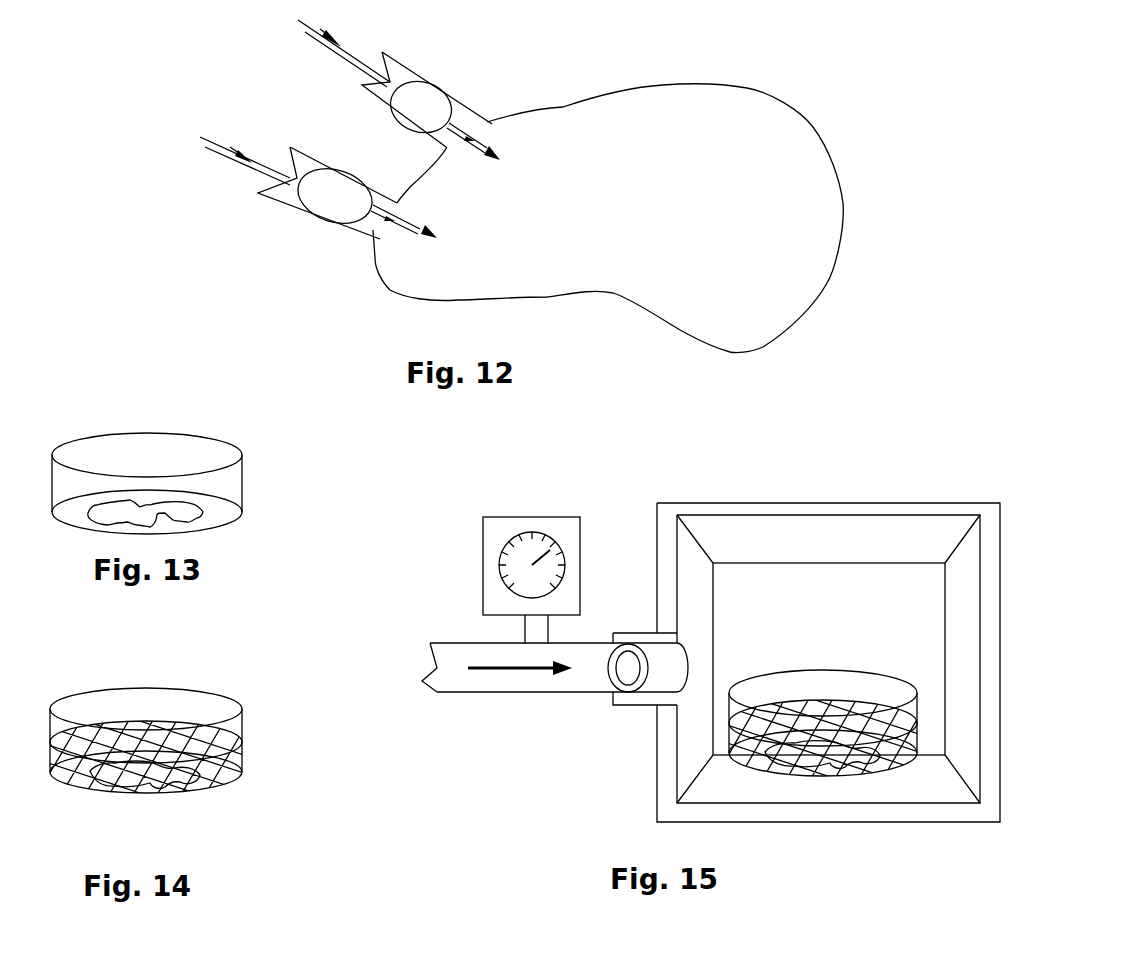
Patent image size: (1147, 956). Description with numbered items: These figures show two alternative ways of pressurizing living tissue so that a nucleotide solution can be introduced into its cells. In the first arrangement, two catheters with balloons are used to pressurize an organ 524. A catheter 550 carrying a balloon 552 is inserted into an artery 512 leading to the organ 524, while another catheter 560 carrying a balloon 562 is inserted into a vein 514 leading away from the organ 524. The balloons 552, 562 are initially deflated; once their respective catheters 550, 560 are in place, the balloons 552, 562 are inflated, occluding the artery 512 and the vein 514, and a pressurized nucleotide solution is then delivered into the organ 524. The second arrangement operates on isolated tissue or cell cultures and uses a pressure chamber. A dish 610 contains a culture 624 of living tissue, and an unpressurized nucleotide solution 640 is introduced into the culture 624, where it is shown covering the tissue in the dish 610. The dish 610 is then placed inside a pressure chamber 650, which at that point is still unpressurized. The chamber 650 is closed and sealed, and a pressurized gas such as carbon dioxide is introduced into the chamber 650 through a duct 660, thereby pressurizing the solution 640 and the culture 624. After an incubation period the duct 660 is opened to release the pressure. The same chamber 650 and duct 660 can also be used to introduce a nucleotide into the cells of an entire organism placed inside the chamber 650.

In FIG. 12, the artery 512 is at (468, 117).
In FIG. 12, the vein 514 is at (373, 230).
In FIG. 12, the organ 524 is at (568, 107).
In FIG. 12, the catheter 550 is at (352, 67).
In FIG. 12, the balloon 552 is at (420, 93).
In FIG. 12, the catheter 560 is at (258, 167).
In FIG. 12, the balloon 562 is at (311, 200).
In FIG. 13, the dish 610 is at (225, 447).
In FIG. 14, the dish 610 is at (240, 698).
In FIG. 15, the dish 610 is at (888, 680).
In FIG. 13, the culture 624 is at (103, 507).
In FIG. 14, the culture 624 is at (240, 775).
In FIG. 15, the culture 624 is at (867, 750).
In FIG. 14, the nucleotide solution 640 is at (122, 724).
In FIG. 15, the nucleotide solution 640 is at (787, 700).
In FIG. 15, the pressure chamber 650 is at (982, 595).
In FIG. 15, the duct 660 is at (593, 693).